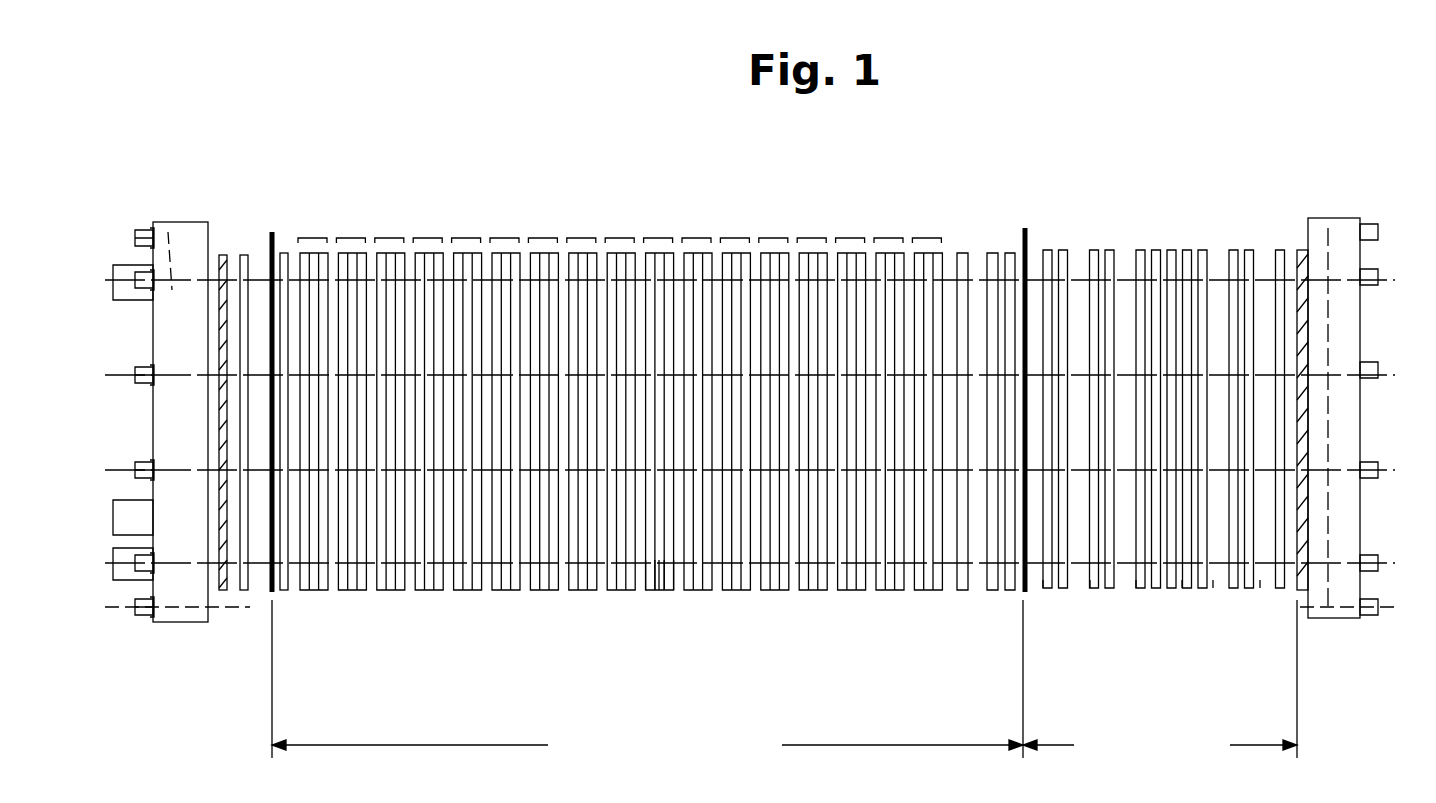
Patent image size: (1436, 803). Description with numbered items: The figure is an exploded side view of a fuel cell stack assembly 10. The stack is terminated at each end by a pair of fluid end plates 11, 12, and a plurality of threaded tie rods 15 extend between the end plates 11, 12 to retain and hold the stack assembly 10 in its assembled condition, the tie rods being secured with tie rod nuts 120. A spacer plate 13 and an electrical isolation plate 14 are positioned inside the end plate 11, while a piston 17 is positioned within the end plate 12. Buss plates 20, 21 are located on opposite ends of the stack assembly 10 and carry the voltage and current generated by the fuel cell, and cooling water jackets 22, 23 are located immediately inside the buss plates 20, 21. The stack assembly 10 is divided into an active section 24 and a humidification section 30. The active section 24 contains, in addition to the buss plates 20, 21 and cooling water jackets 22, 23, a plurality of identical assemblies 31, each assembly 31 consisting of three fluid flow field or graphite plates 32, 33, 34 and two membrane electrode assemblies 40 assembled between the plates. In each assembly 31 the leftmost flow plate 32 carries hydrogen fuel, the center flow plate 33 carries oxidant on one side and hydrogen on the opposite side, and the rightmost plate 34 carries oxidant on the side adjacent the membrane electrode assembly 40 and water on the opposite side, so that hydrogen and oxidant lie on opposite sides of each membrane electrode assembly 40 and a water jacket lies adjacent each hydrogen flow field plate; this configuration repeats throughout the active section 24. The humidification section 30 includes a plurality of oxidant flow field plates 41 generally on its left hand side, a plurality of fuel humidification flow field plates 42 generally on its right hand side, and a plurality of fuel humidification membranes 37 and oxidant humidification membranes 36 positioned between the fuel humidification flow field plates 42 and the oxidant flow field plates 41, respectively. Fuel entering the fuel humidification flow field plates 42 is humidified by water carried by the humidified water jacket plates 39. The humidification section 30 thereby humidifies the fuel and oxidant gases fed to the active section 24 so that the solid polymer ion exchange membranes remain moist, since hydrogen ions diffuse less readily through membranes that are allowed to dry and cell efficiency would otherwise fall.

The fuel cell stack assembly 10 is at (862, 158).
The end plate 11 is at (178, 612).
The end plate 12 is at (1330, 612).
The spacer plate 13 is at (223, 253).
The electrical isolation plate 14 is at (244, 253).
The threaded tie rod 15 is at (170, 232).
The piston 17 is at (1302, 250).
The buss plate 20 is at (278, 250).
The buss plate 21 is at (1022, 230).
The cooling water jacket 22 is at (284, 252).
The cooling water jacket 23 is at (1012, 248).
The active section 24 is at (628, 650).
The humidification section 30 is at (1180, 632).
The assembly 31 is at (466, 238).
The fluid flow field plate 32 is at (646, 592).
The fluid flow field plate 33 is at (660, 592).
The fluid flow field plate 34 is at (673, 592).
The oxidant humidification membrane 36 is at (1048, 250).
The fuel humidification membrane 37 is at (1235, 250).
The humidified water jacket plate 39 is at (1062, 250).
The membrane electrode assembly 40 is at (652, 592).
The oxidant flow field plate 41 is at (1138, 590).
The fuel humidification flow field plate 42 is at (1264, 590).
The tie rod nut 120 is at (134, 607).